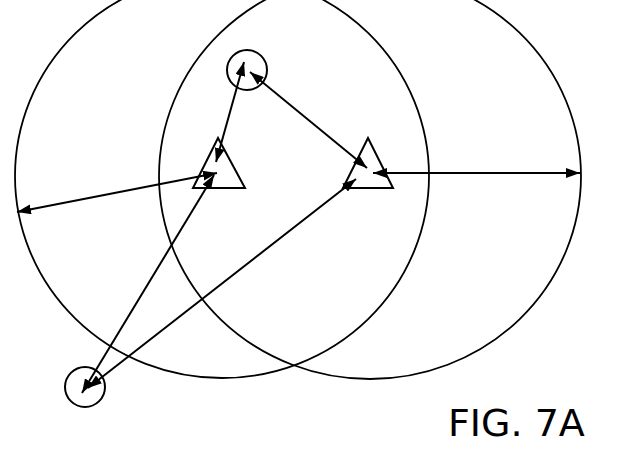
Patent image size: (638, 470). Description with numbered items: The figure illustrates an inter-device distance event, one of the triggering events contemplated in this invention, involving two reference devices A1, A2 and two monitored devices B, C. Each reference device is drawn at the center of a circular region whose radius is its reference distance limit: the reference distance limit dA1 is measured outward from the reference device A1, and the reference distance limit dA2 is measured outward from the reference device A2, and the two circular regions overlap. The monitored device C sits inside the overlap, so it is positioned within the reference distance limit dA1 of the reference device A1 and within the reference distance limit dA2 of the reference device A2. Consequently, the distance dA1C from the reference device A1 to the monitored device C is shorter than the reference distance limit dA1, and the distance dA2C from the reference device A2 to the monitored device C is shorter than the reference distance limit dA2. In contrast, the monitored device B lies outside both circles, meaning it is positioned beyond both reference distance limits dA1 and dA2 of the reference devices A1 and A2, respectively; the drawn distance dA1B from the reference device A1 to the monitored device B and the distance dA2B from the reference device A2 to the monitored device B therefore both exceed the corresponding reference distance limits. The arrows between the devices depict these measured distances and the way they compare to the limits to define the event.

The reference device A1 is at (242, 163).
The reference device A2 is at (373, 144).
The monitored device B is at (70, 381).
The monitored device C is at (251, 53).
The reference distance limit dA1 is at (117, 183).
The reference distance limit dA2 is at (476, 156).
The distance dA1C is at (232, 119).
The distance dA2C is at (308, 120).
The distance dA1B is at (148, 284).
The distance dA2B is at (222, 283).